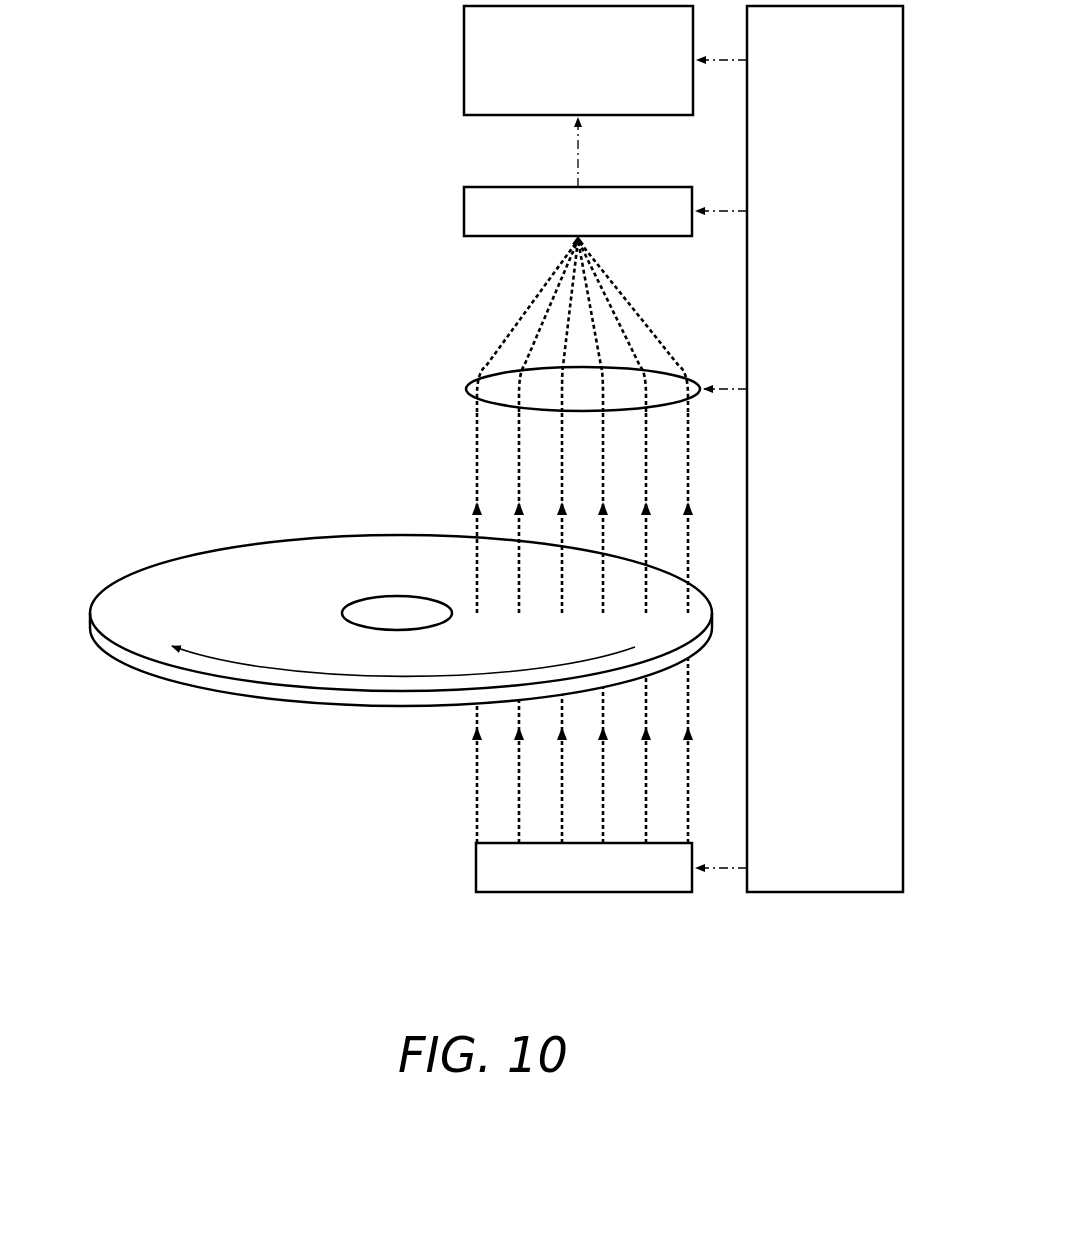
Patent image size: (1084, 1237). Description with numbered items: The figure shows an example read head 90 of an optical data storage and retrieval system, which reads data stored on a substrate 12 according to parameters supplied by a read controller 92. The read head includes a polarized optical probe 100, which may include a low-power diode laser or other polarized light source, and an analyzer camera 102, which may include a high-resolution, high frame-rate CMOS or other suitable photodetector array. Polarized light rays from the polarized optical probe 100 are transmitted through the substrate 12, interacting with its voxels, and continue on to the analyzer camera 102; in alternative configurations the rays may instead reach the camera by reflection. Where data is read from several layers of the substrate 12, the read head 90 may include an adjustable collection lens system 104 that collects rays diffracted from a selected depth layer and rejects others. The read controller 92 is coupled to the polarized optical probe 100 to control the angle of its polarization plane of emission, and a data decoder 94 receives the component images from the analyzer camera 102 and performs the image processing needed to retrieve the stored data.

The read head 90 is at (210, 65).
The read controller 92 is at (837, 475).
The data decoder 94 is at (467, 389).
The polarized optical probe 100 is at (637, 878).
The analyzer camera 102 is at (638, 222).
The adjustable collection lens system 104 is at (648, 71).
The substrate 12 is at (317, 603).